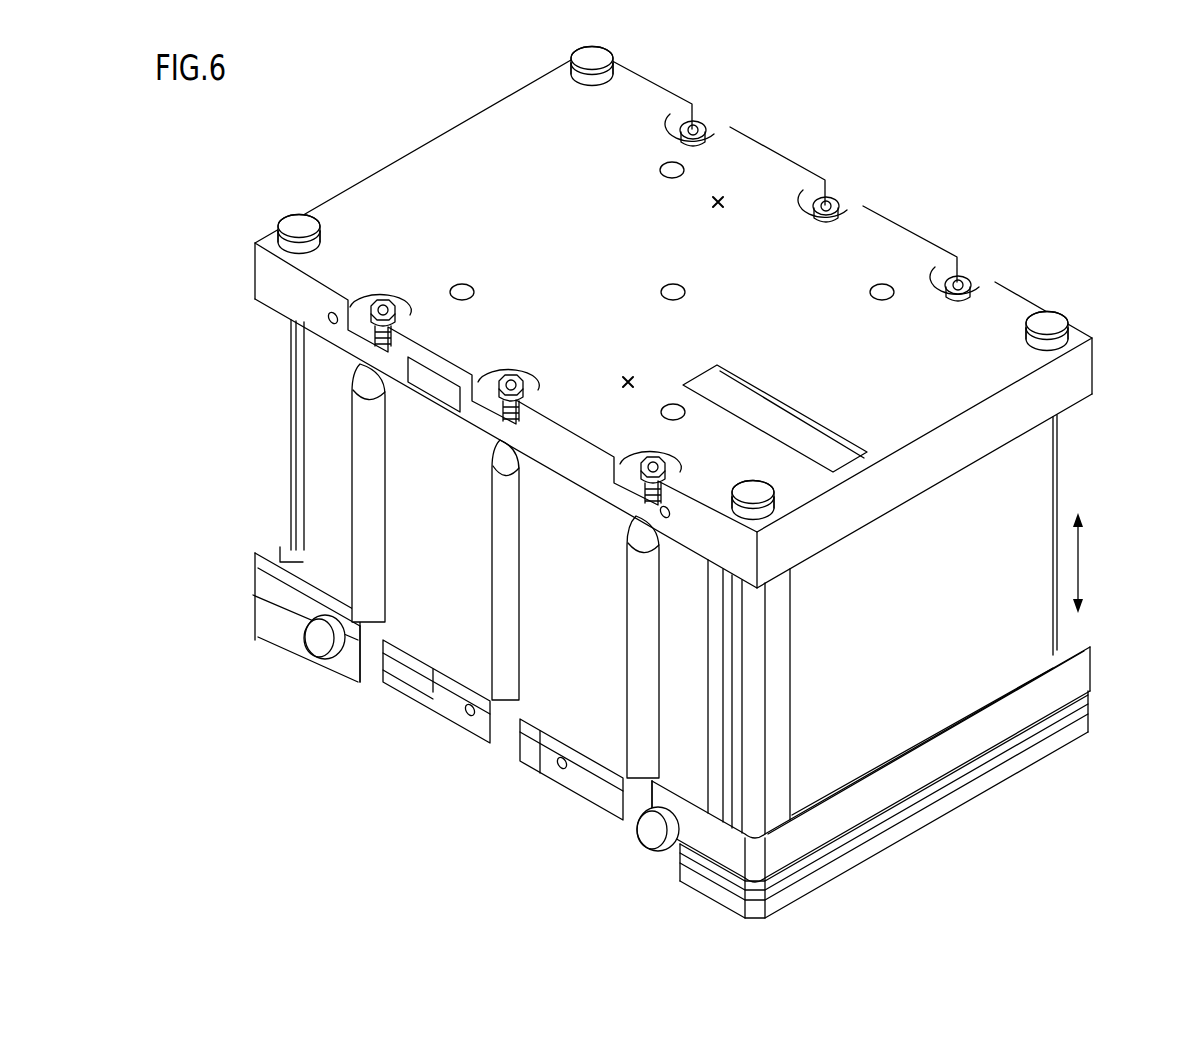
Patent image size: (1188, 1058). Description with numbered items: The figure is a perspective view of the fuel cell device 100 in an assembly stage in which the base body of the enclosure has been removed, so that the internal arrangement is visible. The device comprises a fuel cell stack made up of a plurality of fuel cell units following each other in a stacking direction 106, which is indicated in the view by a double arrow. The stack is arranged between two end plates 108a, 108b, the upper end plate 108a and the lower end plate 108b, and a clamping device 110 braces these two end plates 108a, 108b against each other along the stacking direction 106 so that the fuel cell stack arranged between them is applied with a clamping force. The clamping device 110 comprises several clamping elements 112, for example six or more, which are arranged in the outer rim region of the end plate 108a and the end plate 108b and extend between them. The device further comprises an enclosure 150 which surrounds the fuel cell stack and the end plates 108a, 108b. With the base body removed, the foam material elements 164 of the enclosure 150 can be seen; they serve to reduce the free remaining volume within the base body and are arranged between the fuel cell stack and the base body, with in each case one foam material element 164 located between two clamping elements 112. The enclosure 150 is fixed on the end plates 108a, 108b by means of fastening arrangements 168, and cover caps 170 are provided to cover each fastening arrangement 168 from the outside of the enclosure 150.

The fuel cell device 100 is at (675, 478).
The stacking direction 106 is at (1079, 562).
The end plate 108a is at (452, 158).
The end plate 108b is at (1007, 717).
The clamping device 110 is at (630, 716).
The clamping element 112 is at (710, 111).
The enclosure 150 is at (333, 387).
The foam material element 164 is at (327, 462).
The fastening arrangement 168 is at (300, 652).
The cover cap 170 is at (325, 645).